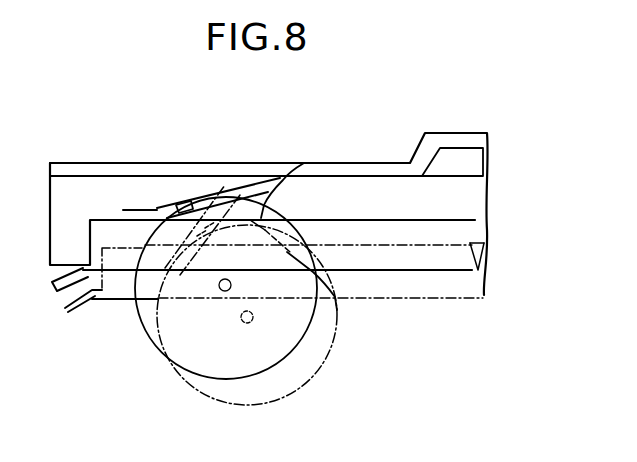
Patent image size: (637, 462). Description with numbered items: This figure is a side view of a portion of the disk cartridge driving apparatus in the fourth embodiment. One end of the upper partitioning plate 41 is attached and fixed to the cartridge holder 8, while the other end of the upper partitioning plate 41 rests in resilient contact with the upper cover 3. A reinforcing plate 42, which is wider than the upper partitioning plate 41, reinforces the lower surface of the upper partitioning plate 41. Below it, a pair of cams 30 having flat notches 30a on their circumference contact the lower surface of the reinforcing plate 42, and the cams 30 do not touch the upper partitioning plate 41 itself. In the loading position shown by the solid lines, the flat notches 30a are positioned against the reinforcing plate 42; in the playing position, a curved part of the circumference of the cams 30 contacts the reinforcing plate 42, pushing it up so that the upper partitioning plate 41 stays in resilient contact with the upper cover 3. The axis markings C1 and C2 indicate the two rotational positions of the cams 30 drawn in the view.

The upper cover 3 is at (272, 167).
The cartridge holder 8 is at (478, 225).
The cams 30 is at (195, 347).
The flat notches 30a is at (318, 150).
The upper partitioning plate 41 is at (194, 199).
The reinforcing plate 42 is at (180, 206).
The axis C1 is at (405, 255).
The axis C2 is at (388, 229).